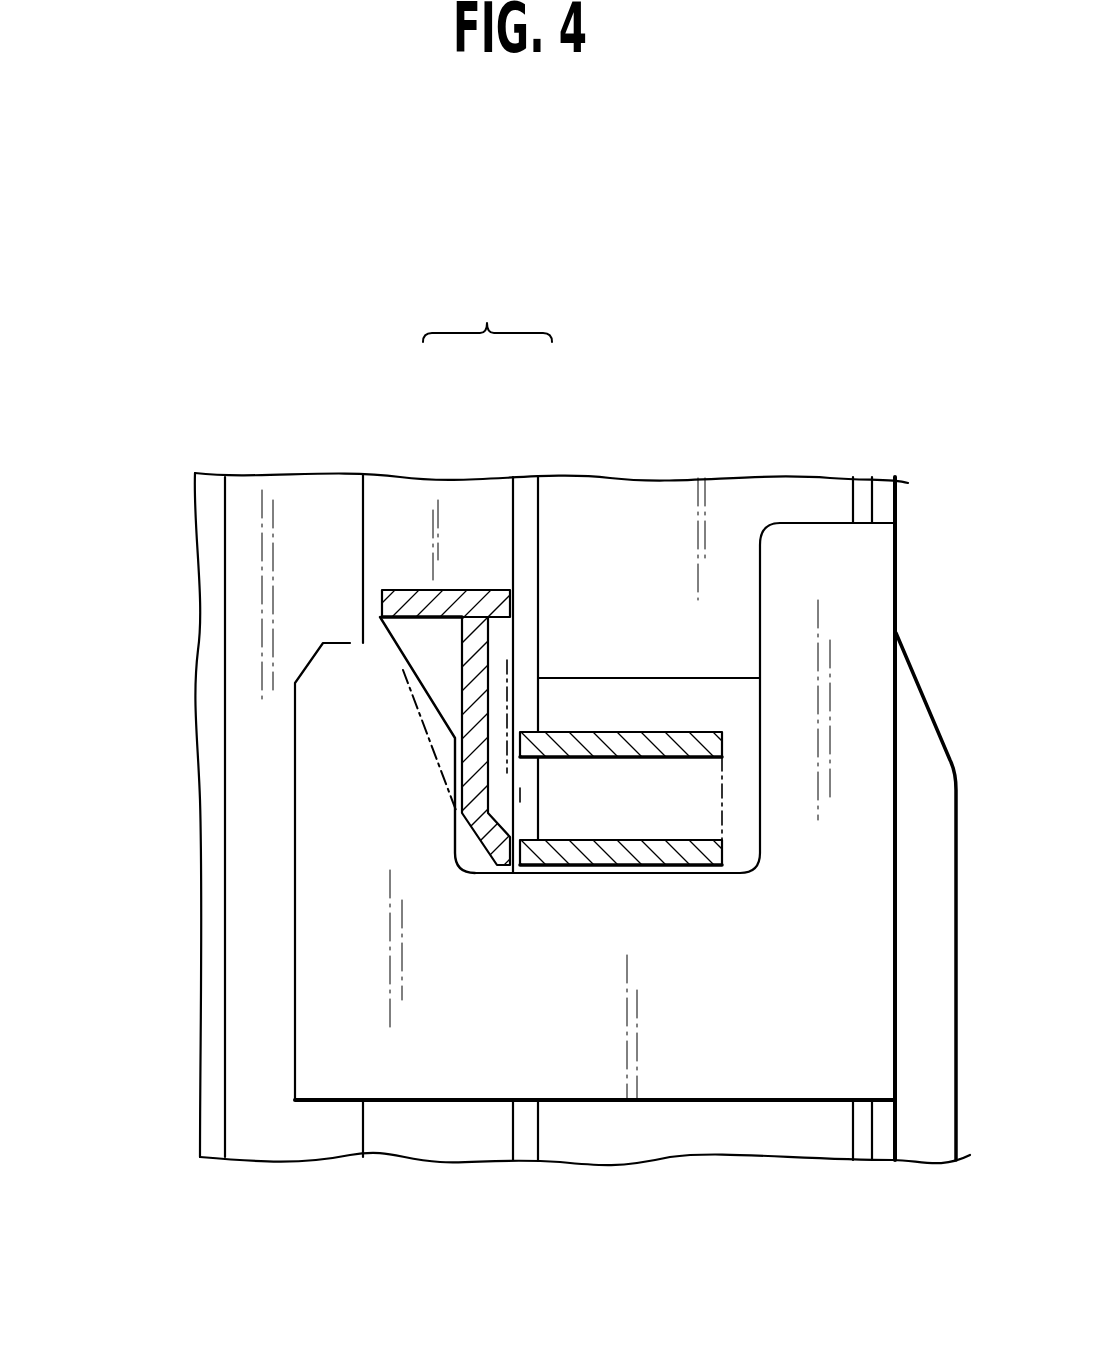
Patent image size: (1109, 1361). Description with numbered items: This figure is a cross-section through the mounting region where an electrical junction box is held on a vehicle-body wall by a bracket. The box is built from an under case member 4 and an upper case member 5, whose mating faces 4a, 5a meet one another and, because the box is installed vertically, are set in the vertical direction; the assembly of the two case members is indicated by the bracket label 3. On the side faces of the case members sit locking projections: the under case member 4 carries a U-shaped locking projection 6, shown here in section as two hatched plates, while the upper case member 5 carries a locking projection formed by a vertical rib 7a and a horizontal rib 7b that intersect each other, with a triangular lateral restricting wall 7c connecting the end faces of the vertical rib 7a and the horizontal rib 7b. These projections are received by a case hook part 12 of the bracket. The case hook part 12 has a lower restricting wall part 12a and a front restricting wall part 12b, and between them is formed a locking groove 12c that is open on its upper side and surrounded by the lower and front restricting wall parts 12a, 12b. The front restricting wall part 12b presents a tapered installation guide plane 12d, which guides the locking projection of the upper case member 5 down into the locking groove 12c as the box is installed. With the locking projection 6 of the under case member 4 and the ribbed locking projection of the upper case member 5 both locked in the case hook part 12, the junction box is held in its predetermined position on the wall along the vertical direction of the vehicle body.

The slide rail assembly 3 is at (487, 306).
The under case member 4 is at (593, 518).
The upper case member 5 is at (330, 513).
The mating face of under case member 4a is at (507, 1115).
The mating face of upper case member 5a is at (512, 1132).
The locking projection of under case member 6 is at (705, 853).
The vertical rib 7a is at (477, 655).
The horizontal rib 7b is at (397, 605).
The lateral restricting wall 7c is at (423, 735).
The case hook part 12 is at (700, 1108).
The lower restricting wall part 12a is at (578, 1013).
The front restricting wall part 12b is at (342, 742).
The locking groove 12c is at (695, 862).
The tapered installation guide plane 12d is at (425, 700).